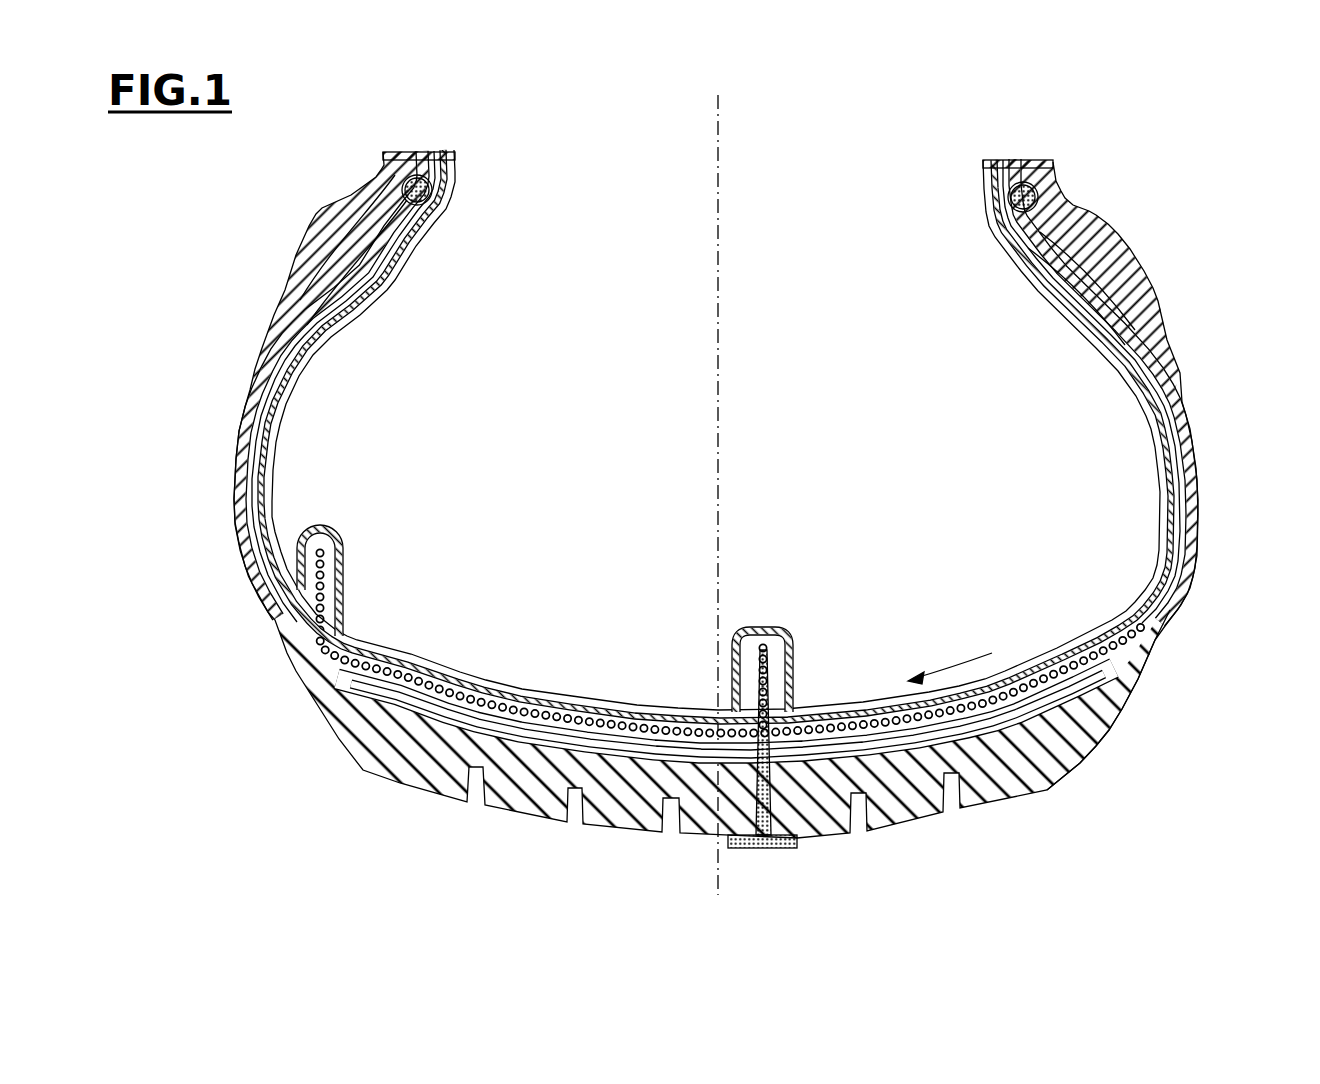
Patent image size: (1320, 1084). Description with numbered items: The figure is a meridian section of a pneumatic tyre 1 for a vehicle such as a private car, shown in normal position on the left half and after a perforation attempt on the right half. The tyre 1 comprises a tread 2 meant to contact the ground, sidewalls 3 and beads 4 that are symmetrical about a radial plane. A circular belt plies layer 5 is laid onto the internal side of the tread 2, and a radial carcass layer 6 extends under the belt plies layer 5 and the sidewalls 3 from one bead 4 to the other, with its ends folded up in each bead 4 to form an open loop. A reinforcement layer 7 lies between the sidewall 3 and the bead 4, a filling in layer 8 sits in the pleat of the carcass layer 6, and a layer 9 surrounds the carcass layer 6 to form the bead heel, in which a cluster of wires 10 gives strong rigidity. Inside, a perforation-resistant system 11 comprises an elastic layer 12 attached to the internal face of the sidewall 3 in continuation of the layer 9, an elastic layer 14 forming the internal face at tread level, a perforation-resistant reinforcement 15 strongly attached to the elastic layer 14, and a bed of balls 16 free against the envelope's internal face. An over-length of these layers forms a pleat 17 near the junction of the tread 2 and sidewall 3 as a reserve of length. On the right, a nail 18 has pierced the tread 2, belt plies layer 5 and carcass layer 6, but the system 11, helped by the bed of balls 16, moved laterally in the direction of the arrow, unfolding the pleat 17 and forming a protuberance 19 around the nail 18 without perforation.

The pneumatic tyre 1 is at (1236, 368).
The tread 2 is at (905, 826).
The sidewall 3 is at (1191, 530).
The bead 4 is at (1016, 160).
The belt plies layer 5 is at (1083, 743).
The carcass layer 6 is at (1153, 617).
The reinforcement layer 7 is at (1153, 297).
The filling in layer 8 is at (1057, 257).
The layer forming the bead heel 9 is at (1070, 232).
The cluster of wires 10 is at (1055, 176).
The perforation-resistant system 11 is at (410, 655).
The elastic layer 12 is at (1158, 415).
The elastic layer 14 is at (518, 693).
The perforation-resistant reinforcement 15 is at (572, 716).
The bed of balls 16 is at (630, 736).
The pleat 17 is at (322, 535).
The nail 18 is at (763, 850).
The protuberance 19 is at (768, 627).